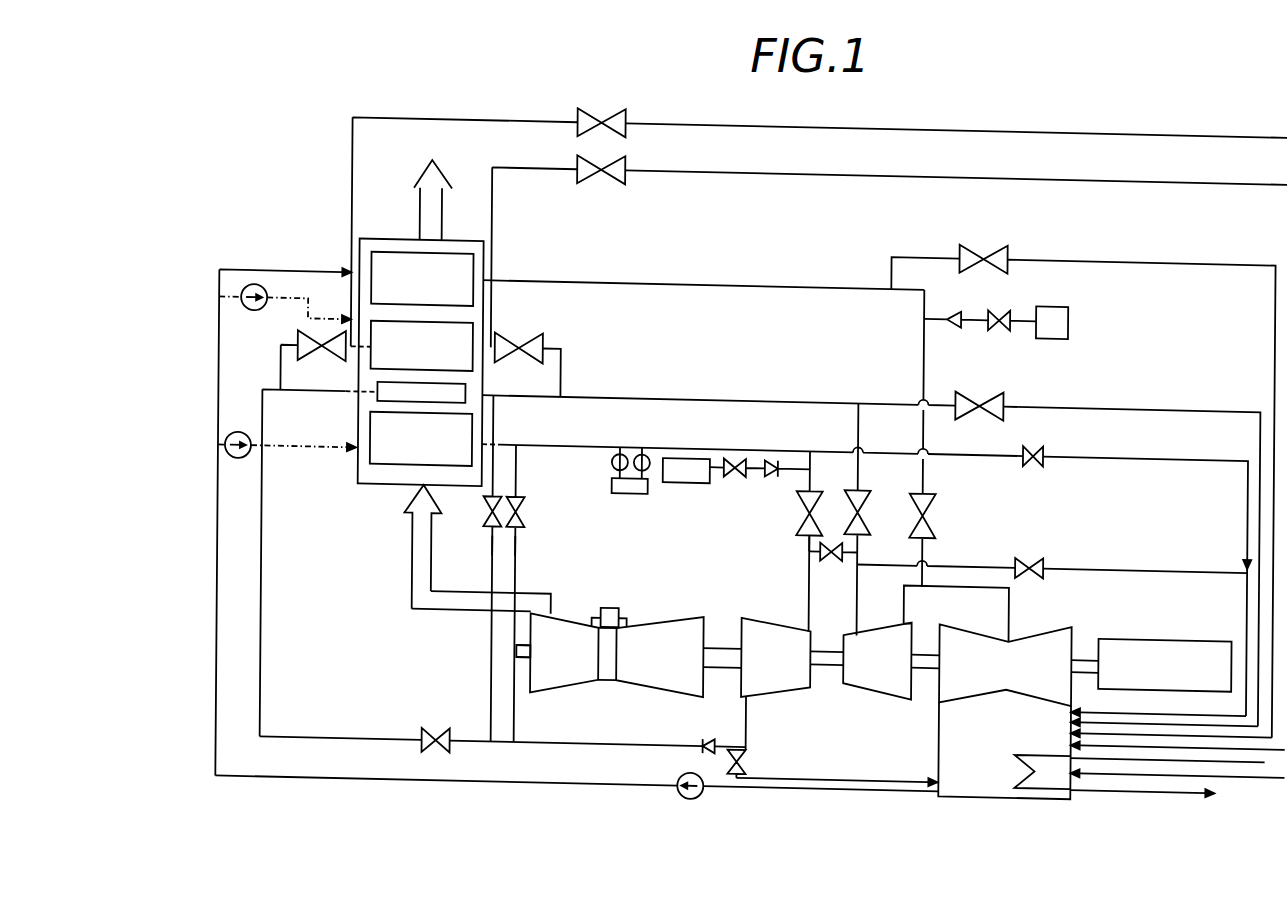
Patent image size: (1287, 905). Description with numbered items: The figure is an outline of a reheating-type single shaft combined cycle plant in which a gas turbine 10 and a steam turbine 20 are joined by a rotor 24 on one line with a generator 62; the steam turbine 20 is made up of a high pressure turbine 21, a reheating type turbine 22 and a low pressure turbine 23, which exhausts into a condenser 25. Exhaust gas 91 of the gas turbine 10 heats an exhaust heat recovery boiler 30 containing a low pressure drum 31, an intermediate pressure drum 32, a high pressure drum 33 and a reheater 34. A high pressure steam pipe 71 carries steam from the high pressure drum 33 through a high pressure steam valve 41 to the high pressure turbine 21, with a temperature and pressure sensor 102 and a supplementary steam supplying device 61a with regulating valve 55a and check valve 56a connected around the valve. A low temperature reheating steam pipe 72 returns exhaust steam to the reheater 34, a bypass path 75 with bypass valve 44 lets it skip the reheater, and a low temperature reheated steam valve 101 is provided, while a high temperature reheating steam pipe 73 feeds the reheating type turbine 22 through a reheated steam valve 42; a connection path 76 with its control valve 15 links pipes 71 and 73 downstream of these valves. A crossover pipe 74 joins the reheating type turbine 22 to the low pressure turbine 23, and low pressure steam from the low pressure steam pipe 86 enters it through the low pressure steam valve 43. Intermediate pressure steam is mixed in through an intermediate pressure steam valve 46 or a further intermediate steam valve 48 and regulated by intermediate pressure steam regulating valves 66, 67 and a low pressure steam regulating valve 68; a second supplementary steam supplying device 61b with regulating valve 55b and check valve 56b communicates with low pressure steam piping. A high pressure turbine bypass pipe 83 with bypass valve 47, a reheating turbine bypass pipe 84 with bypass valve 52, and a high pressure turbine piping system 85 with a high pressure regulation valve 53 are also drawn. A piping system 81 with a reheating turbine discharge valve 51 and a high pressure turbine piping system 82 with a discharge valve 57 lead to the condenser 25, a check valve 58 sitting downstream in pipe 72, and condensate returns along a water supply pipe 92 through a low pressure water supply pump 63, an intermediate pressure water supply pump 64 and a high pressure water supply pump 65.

The gas turbine 10 is at (568, 680).
The bypass valve 15 is at (833, 543).
The steam turbine 20 is at (906, 655).
The high pressure turbine 21 is at (776, 658).
The reheating type turbine 22 is at (877, 660).
The low pressure turbine 23 is at (1005, 665).
The shaft 24 is at (722, 647).
The condenser 25 is at (1111, 753).
The exhaust heat recovery boiler 30 is at (412, 376).
The low pressure drum 31 is at (422, 279).
The intermediate pressure drum 32 is at (422, 346).
The high pressure drum 33 is at (421, 439).
The reheater 34 is at (421, 393).
The high pressure steam valve 41 is at (796, 541).
The reheated steam valve 42 is at (847, 519).
The low pressure steam valve 43 is at (910, 540).
The bypass valve 44 is at (480, 568).
The intermediate pressure steam valve 46 is at (303, 526).
The high pressure turbine bypass valve 47 is at (529, 594).
The further intermediate steam valve 48 is at (531, 356).
The reheating turbine discharge valve 51 is at (1029, 557).
The reheating turbine bypass valve 52 is at (979, 398).
The high pressure regulation valve 53 is at (987, 445).
The regulating valve 55a is at (738, 478).
The regulating valve 55b is at (1009, 309).
The check valve 56a is at (783, 479).
The check valve 56b is at (956, 308).
The discharge valve 57 is at (722, 739).
The check valve 58 is at (716, 736).
The supplementary steam supplying device 61a is at (693, 470).
The supplementary steam supplying device 61b is at (1053, 311).
The generator 62 is at (1151, 665).
The low pressure water supply pump 63 is at (699, 800).
The intermediate pressure water supply pump 64 is at (285, 298).
The high pressure water supply pump 65 is at (287, 433).
The intermediate pressure steam regulating valve 66 is at (819, 226).
The intermediate pressure steam regulating valve 67 is at (889, 252).
The low pressure steam regulating valve 68 is at (1082, 481).
The high pressure steam pipe 71 is at (702, 449).
The low temperature reheating steam pipe 72 is at (552, 746).
The high temperature reheating steam pipe 73 is at (722, 397).
The crossover pipe 74 is at (956, 614).
The bypass path 75 is at (485, 553).
The connection path 76 is at (805, 549).
The piping system 81 is at (980, 561).
The high pressure turbine piping system 82 is at (770, 775).
The high pressure turbine bypass pipe 83 is at (522, 552).
The reheating turbine bypass pipe 84 is at (1058, 400).
The high pressure turbine piping system 85 is at (1084, 449).
The low pressure steam pipe 86 is at (815, 282).
The exhaust gas 91 is at (417, 384).
The water supply pipe 92 is at (486, 791).
The low temperature reheated steam valve 101 is at (438, 730).
The temperature and pressure sensor 102 is at (631, 482).